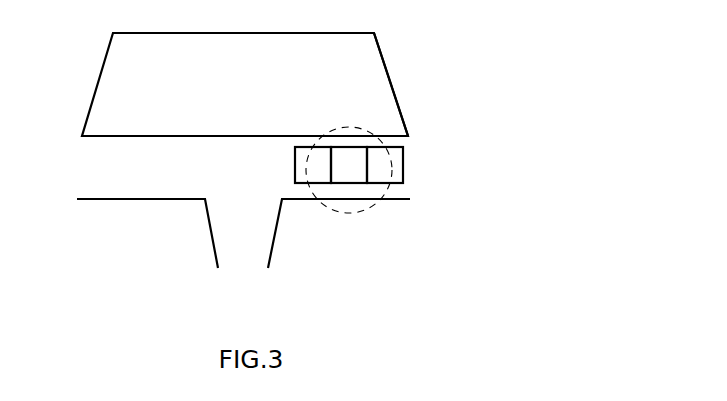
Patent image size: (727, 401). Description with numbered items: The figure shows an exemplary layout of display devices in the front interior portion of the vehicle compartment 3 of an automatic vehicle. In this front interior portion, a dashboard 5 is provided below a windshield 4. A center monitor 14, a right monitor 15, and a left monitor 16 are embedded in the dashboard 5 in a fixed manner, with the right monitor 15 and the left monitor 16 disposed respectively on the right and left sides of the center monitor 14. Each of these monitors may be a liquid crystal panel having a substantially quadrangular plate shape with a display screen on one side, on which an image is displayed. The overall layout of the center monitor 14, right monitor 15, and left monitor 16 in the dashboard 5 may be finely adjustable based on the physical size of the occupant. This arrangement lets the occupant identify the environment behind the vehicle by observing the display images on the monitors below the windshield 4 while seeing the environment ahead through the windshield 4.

The vehicle compartment 3 is at (121, 93).
The windshield 4 is at (376, 80).
The dashboard 5 is at (157, 187).
The center monitor 14 is at (350, 173).
The right monitor 15 is at (385, 173).
The left monitor 16 is at (313, 173).